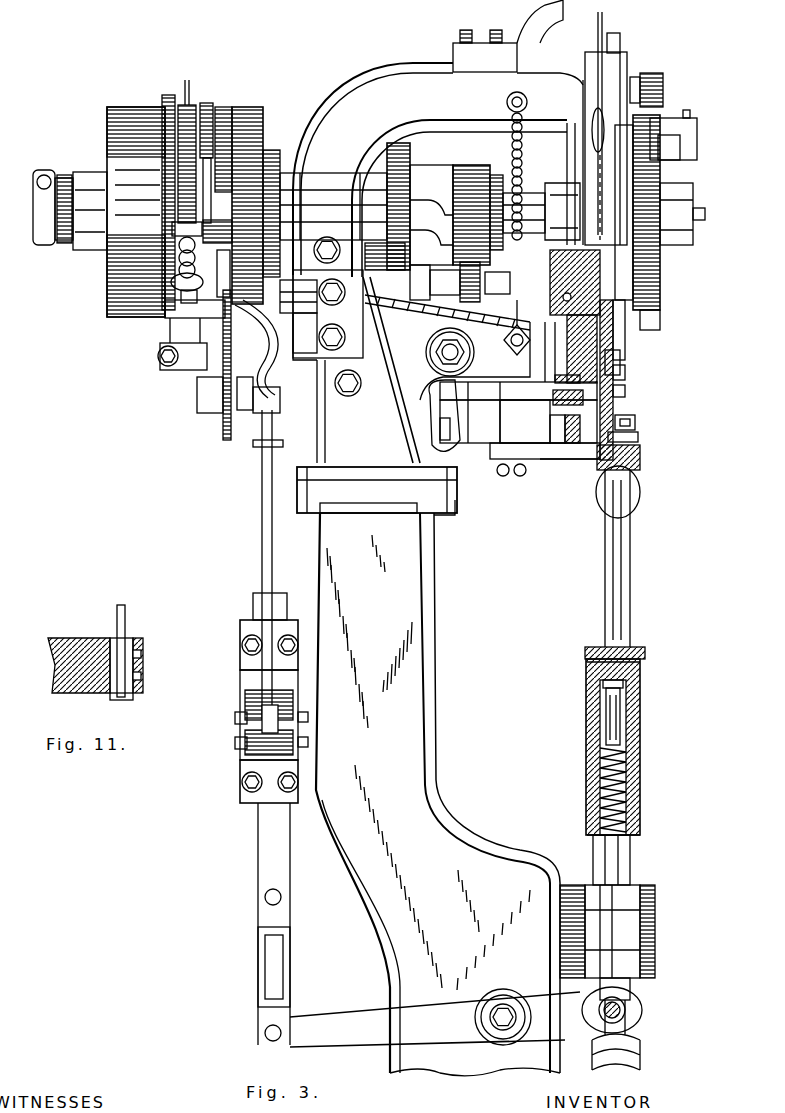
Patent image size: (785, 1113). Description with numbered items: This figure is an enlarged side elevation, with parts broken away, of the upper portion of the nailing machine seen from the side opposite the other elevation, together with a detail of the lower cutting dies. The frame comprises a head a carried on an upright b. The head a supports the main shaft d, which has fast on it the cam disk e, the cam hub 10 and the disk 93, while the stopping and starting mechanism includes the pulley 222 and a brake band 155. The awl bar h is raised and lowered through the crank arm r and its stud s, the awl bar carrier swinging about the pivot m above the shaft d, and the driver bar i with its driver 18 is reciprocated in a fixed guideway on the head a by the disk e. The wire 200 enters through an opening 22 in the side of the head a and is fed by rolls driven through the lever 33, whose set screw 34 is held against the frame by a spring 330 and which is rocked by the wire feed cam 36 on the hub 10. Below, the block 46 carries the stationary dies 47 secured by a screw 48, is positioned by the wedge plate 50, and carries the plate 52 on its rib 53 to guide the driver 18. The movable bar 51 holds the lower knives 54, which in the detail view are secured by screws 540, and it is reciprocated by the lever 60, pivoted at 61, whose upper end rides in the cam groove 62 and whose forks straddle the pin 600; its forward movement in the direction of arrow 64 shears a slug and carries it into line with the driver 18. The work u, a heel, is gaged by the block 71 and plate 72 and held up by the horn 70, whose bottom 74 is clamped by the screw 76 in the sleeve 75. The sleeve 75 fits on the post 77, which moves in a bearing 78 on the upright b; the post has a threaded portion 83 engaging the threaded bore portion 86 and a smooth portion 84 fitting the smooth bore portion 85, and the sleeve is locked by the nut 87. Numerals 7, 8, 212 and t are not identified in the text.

In FIG. 3, the wire 200 is at (603, 18).
In FIG. 11, the wire 200 is at (125, 612).
In FIG. 3, the driver bar i is at (620, 43).
In FIG. 3, the pivot m is at (655, 80).
In FIG. 3, the crank arm r is at (666, 120).
In FIG. 3, the stud s is at (682, 205).
In FIG. 3, the opening 22 is at (606, 128).
In FIG. 3, the needle bar 7 is at (590, 470).
In FIG. 3, the brake band 155 is at (192, 95).
In FIG. 3, the disk 93 is at (255, 118).
In FIG. 3, the pulley 222 is at (112, 300).
In FIG. 3, the main shaft d is at (33, 215).
In FIG. 3, the cam hub 10 is at (412, 172).
In FIG. 3, the cam groove 62 is at (435, 180).
In FIG. 3, the wire feed cam 36 is at (495, 175).
In FIG. 3, the spring 330 is at (530, 166).
In FIG. 3, the gear 212 is at (660, 270).
In FIG. 3, the cam disk e is at (652, 319).
In FIG. 3, the bearing block 8 is at (586, 282).
In FIG. 3, the lever 60 is at (443, 303).
In FIG. 3, the pivot 61 is at (442, 352).
In FIG. 3, the lever 33 is at (473, 344).
In FIG. 3, the set screw 34 is at (515, 336).
In FIG. 3, the wedge plate 50 is at (560, 376).
In FIG. 3, the driver 18 is at (620, 360).
In FIG. 3, the stationary dies 47 is at (613, 382).
In FIG. 3, the screw 48 is at (553, 396).
In FIG. 3, the plate 52 is at (625, 390).
In FIG. 3, the rib 53 is at (625, 405).
In FIG. 3, the pin 600 is at (446, 415).
In FIG. 3, the arrow 64 is at (500, 438).
In FIG. 3, the movable bar 51 is at (525, 421).
In FIG. 11, the movable bar 51 is at (70, 645).
In FIG. 3, the block 46 is at (556, 429).
In FIG. 3, the lower knives 54 is at (570, 429).
In FIG. 11, the lower knives 54 is at (110, 680).
In FIG. 3, the awl bar h is at (635, 422).
In FIG. 3, the collar t is at (638, 438).
In FIG. 3, the work u is at (640, 457).
In FIG. 3, the block 71 is at (495, 462).
In FIG. 3, the gage plate 72 is at (580, 460).
In FIG. 3, the head a is at (360, 432).
In FIG. 3, the upright b is at (438, 794).
In FIG. 3, the horn 70 is at (630, 580).
In FIG. 3, the bottom of the horn 74 is at (600, 648).
In FIG. 3, the clamping screw 76 is at (590, 663).
In FIG. 3, the smooth upper portion 85 is at (623, 684).
In FIG. 3, the smooth portion 84 is at (606, 720).
In FIG. 3, the sleeve 75 is at (640, 708).
In FIG. 3, the threaded portion of bore 86 is at (626, 758).
In FIG. 3, the threaded portion 83 is at (626, 796).
In FIG. 3, the nut 87 is at (640, 830).
In FIG. 3, the post 77 is at (630, 860).
In FIG. 3, the bearing 78 is at (655, 898).
In FIG. 11, the screws 540 is at (143, 661).